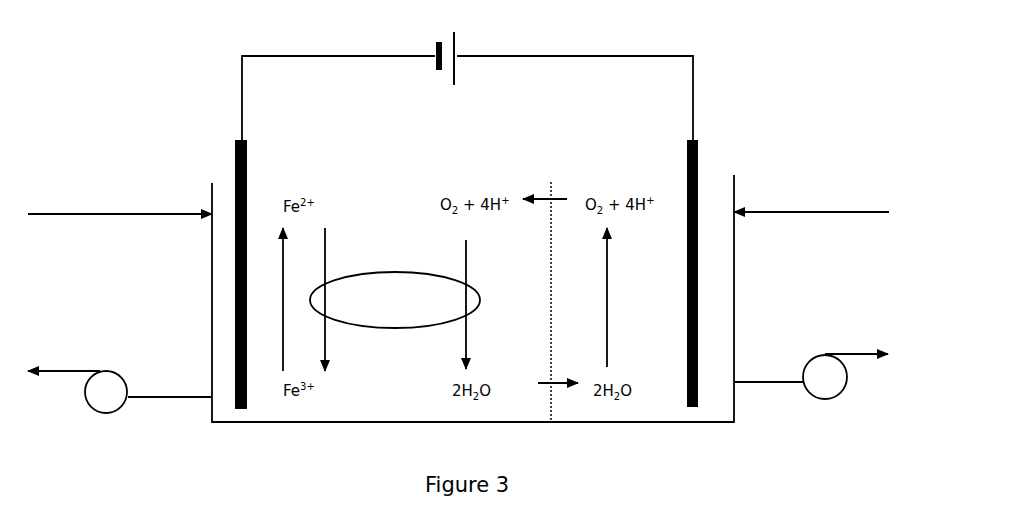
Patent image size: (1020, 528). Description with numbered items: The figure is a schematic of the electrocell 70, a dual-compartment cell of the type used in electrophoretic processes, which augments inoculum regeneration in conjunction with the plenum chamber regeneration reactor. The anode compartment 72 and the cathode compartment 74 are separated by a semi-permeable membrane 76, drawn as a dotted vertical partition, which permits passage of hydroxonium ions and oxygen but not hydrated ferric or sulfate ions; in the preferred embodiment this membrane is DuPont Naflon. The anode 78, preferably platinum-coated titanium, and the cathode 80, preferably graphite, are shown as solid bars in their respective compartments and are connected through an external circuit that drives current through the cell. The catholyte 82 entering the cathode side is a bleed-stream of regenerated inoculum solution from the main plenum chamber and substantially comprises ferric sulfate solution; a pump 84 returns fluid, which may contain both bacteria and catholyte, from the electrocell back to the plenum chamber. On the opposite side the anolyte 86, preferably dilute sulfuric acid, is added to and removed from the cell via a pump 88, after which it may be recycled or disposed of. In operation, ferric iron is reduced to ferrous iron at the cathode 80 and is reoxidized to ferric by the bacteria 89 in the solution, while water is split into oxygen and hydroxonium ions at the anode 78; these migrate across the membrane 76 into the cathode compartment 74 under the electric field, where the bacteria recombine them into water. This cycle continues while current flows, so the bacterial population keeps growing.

The electrocell 70 is at (242, 90).
The anode compartment 72 is at (597, 407).
The cathode compartment 74 is at (362, 407).
The semi-permeable membrane 76 is at (545, 293).
The anode 78 is at (687, 152).
The cathode 80 is at (247, 152).
The catholyte 82 is at (120, 203).
The pump 84 is at (98, 413).
The anolyte 86 is at (795, 212).
The pump 88 is at (843, 379).
The bacteria 89 is at (395, 279).